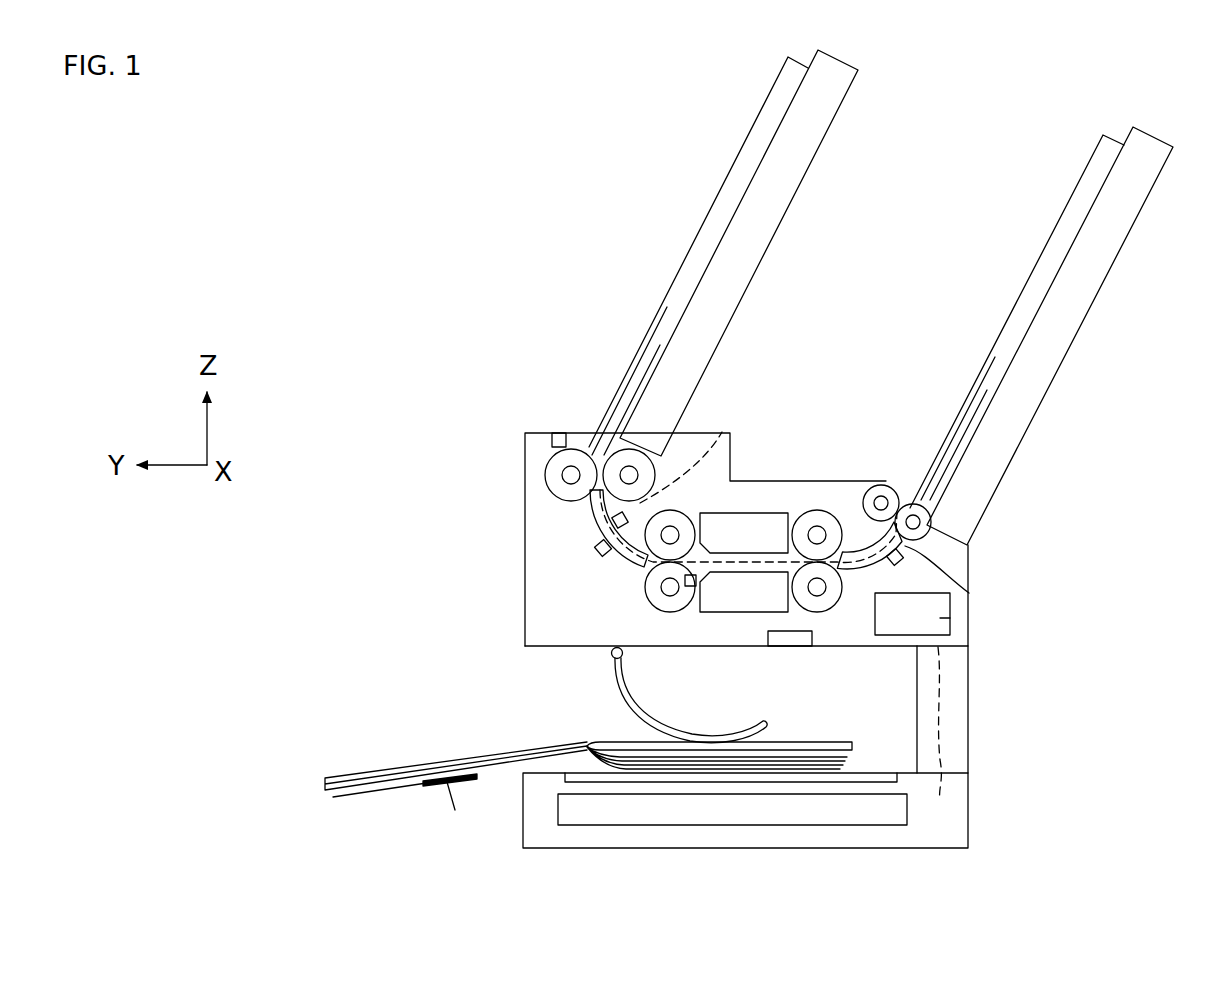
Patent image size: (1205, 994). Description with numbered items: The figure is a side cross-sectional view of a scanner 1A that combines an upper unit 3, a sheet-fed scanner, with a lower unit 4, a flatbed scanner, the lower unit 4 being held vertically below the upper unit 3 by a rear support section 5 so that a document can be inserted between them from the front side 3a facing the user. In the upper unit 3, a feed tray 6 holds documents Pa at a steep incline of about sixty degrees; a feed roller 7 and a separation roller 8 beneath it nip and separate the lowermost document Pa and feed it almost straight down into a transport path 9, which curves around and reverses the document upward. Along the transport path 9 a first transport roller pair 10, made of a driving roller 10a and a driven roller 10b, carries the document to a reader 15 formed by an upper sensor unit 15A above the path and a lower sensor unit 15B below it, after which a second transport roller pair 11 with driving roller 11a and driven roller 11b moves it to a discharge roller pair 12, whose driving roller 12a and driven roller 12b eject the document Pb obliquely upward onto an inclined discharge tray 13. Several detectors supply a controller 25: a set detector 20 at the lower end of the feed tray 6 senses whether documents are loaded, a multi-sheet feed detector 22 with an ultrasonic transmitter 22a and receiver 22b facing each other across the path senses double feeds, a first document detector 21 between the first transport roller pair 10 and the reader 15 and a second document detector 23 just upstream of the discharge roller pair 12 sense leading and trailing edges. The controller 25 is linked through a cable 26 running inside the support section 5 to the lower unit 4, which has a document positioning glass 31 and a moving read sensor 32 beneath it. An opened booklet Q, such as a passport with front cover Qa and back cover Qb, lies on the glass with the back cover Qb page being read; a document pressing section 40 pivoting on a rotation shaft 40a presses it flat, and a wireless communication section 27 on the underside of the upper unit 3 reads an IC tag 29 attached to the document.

The scanner 1A is at (477, 188).
The upper unit 3 is at (969, 617).
The side 3a is at (525, 497).
The lower unit 4 is at (969, 812).
The support section 5 is at (969, 708).
The feed tray 6 is at (729, 330).
The feed roller 7 is at (612, 456).
The separation roller 8 is at (546, 466).
The transport path 9 is at (722, 431).
The first transport roller pair 10 is at (575, 603).
The driving roller 10a is at (648, 613).
The driven roller 10b is at (630, 591).
The second transport roller pair 11 is at (853, 563).
The driving roller 11a is at (817, 612).
The driven roller 11b is at (818, 510).
The discharge roller pair 12 is at (925, 469).
The driving roller 12a is at (968, 545).
The driven roller 12b is at (876, 486).
The discharge tray 13 is at (1037, 420).
The reader 15 is at (746, 542).
The upper sensor unit 15A is at (750, 513).
The lower sensor unit 15B is at (744, 598).
The set detector 20 is at (558, 433).
The first document detector 21 is at (693, 588).
The multi-sheet feed detector 22 is at (550, 549).
The ultrasonic transmitter 22a is at (616, 515).
The ultrasonic receiver 22b is at (595, 553).
The second document detector 23 is at (969, 593).
The controller 25 is at (940, 618).
The cable 26 is at (940, 747).
The wireless communication section 27 is at (794, 640).
The IC tag 29 is at (447, 782).
The document positioning glass 31 is at (758, 783).
The read sensor 32 is at (686, 813).
The document pressing section 40 is at (656, 695).
The rotation shaft 40a is at (612, 657).
The document Pa is at (703, 222).
The document Pb is at (1020, 292).
The booklet Q is at (456, 742).
The front cover Qa is at (438, 770).
The back cover Qb is at (808, 742).